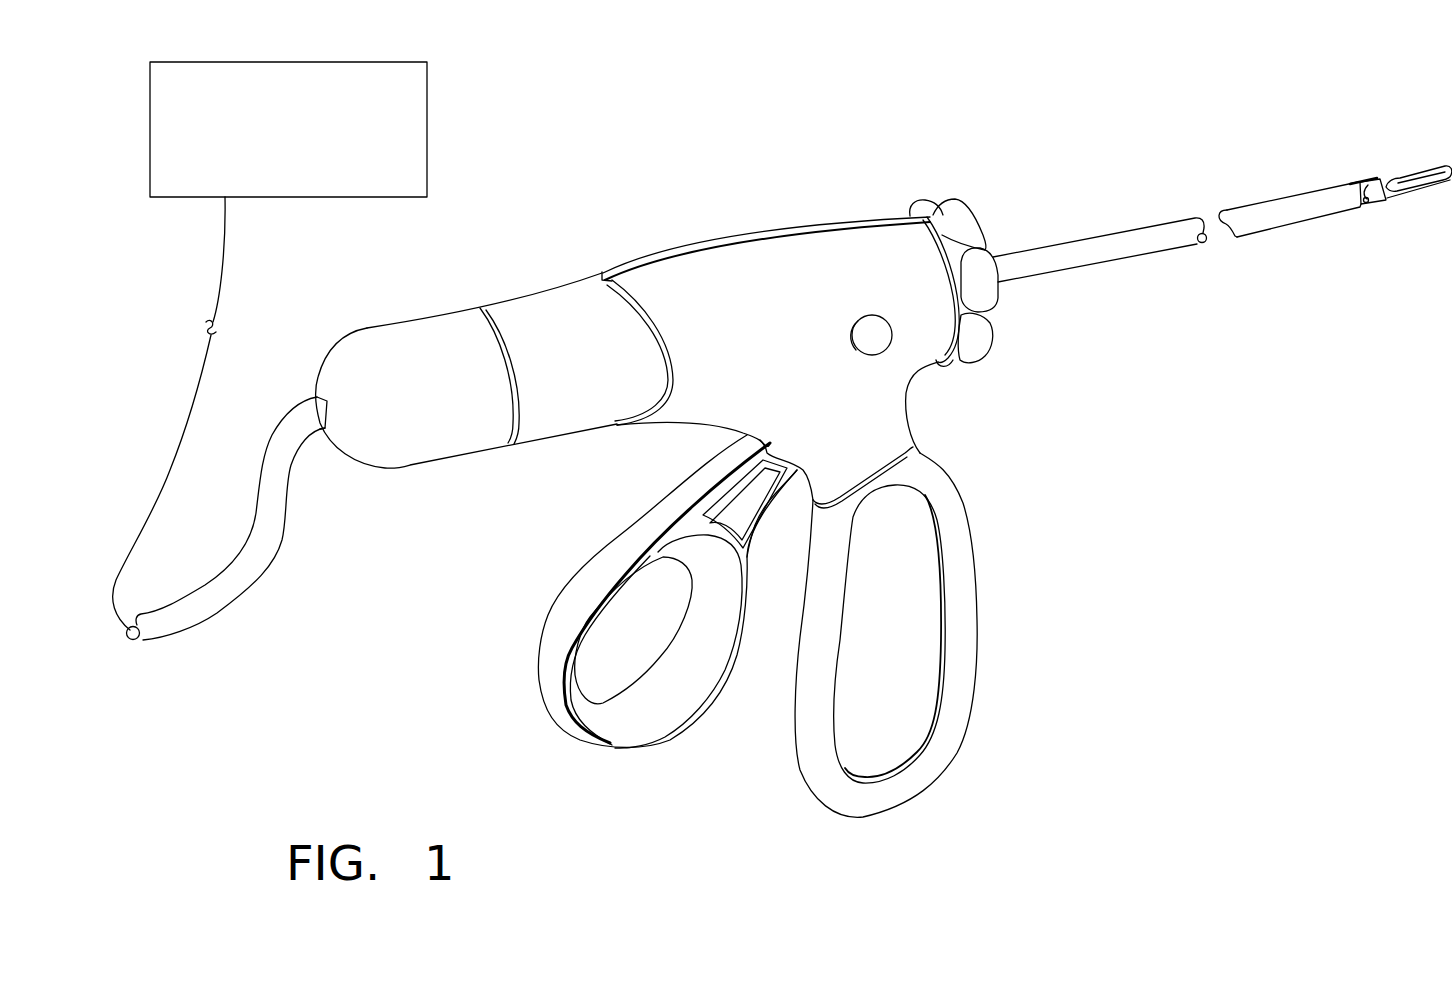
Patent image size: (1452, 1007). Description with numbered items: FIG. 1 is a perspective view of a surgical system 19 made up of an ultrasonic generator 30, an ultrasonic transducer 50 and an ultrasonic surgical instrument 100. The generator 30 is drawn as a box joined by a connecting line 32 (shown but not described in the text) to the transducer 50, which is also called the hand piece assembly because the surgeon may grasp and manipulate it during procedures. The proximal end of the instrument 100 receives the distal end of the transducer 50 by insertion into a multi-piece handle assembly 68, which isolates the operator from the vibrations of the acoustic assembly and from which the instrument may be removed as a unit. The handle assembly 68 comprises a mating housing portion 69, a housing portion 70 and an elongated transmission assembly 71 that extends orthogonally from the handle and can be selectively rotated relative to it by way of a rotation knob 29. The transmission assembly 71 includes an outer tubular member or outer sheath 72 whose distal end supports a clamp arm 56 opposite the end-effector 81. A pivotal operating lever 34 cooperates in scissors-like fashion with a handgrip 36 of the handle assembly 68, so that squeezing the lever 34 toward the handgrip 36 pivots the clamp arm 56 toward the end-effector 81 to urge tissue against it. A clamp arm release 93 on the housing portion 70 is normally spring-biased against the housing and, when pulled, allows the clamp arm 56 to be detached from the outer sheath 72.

The surgical system 19 is at (708, 78).
The rotation knob 29 is at (958, 218).
The ultrasonic generator 30 is at (415, 120).
The cable 32 is at (217, 602).
The operating lever 34 is at (648, 717).
The handgrip 36 is at (813, 718).
The ultrasonic transducer 50 is at (583, 400).
The clamp arm 56 is at (1407, 158).
The handle assembly 68 is at (813, 208).
The mating housing portion 69 is at (625, 262).
The housing portion 70 is at (880, 415).
The transmission assembly 71 is at (1163, 173).
The outer sheath 72 is at (1070, 260).
The end-effector 81 is at (1448, 188).
The clamp arm release 93 is at (872, 337).
The ultrasonic surgical instrument 100 is at (1052, 762).